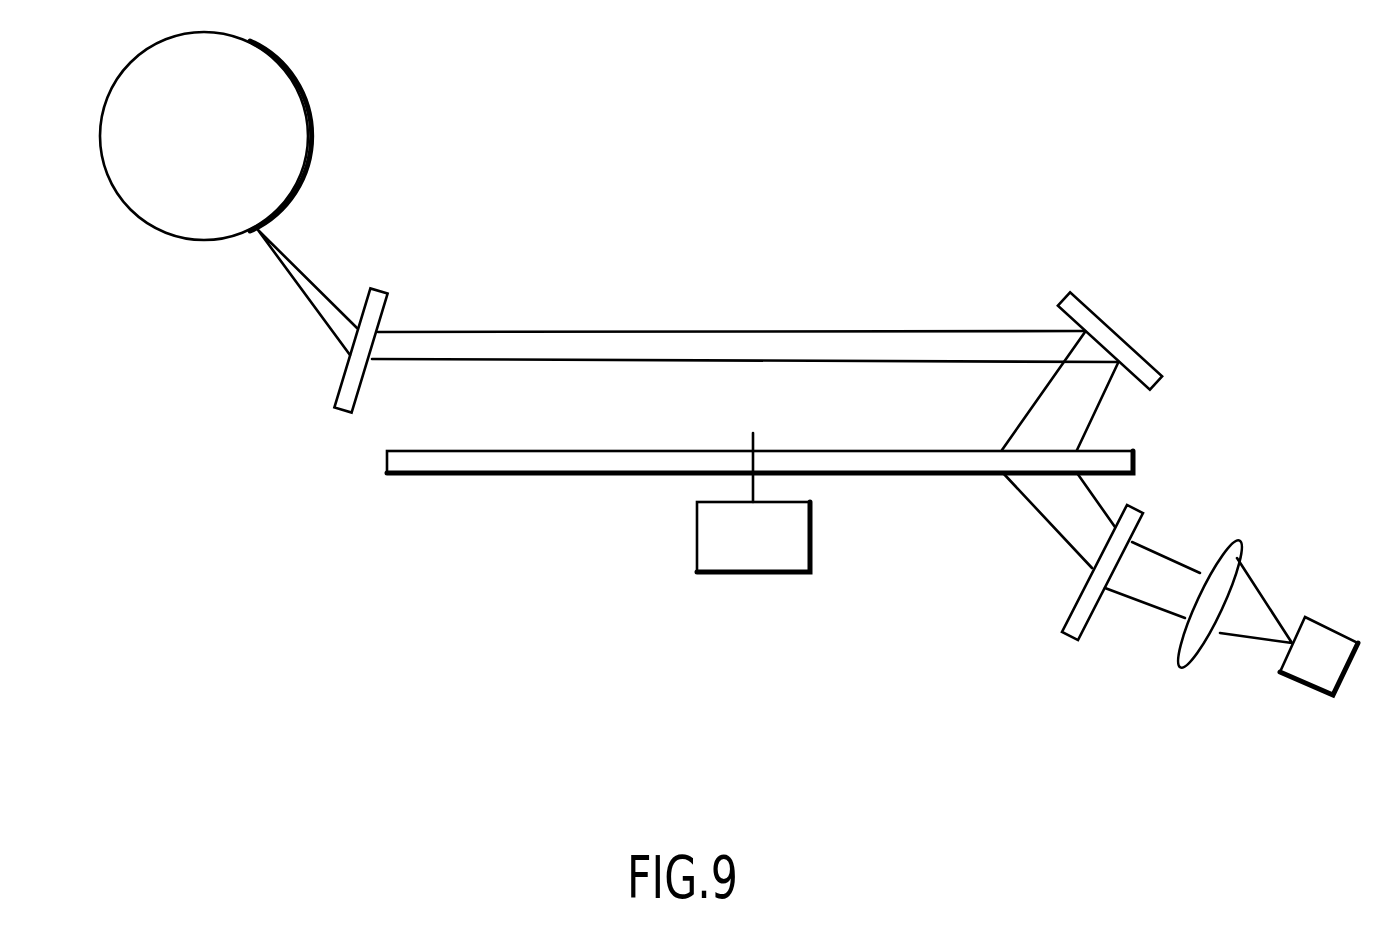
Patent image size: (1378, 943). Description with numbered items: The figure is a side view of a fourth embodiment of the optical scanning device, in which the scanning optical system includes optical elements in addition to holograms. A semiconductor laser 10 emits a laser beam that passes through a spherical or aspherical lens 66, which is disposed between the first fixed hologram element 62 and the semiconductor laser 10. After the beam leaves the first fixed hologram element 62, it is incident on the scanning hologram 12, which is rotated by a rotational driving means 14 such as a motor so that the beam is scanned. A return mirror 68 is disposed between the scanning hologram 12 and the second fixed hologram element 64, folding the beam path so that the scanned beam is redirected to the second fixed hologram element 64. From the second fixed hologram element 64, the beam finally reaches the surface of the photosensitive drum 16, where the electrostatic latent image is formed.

The semiconductor laser 10 is at (1298, 683).
The scanning hologram 12 is at (1133, 455).
The rotational driving means 14 is at (715, 547).
The photosensitive drum 16 is at (267, 80).
The first fixed hologram element 62 is at (1075, 625).
The second fixed hologram element 64 is at (378, 293).
The spherical or aspherical lens 66 is at (1185, 650).
The return mirror 68 is at (1105, 330).